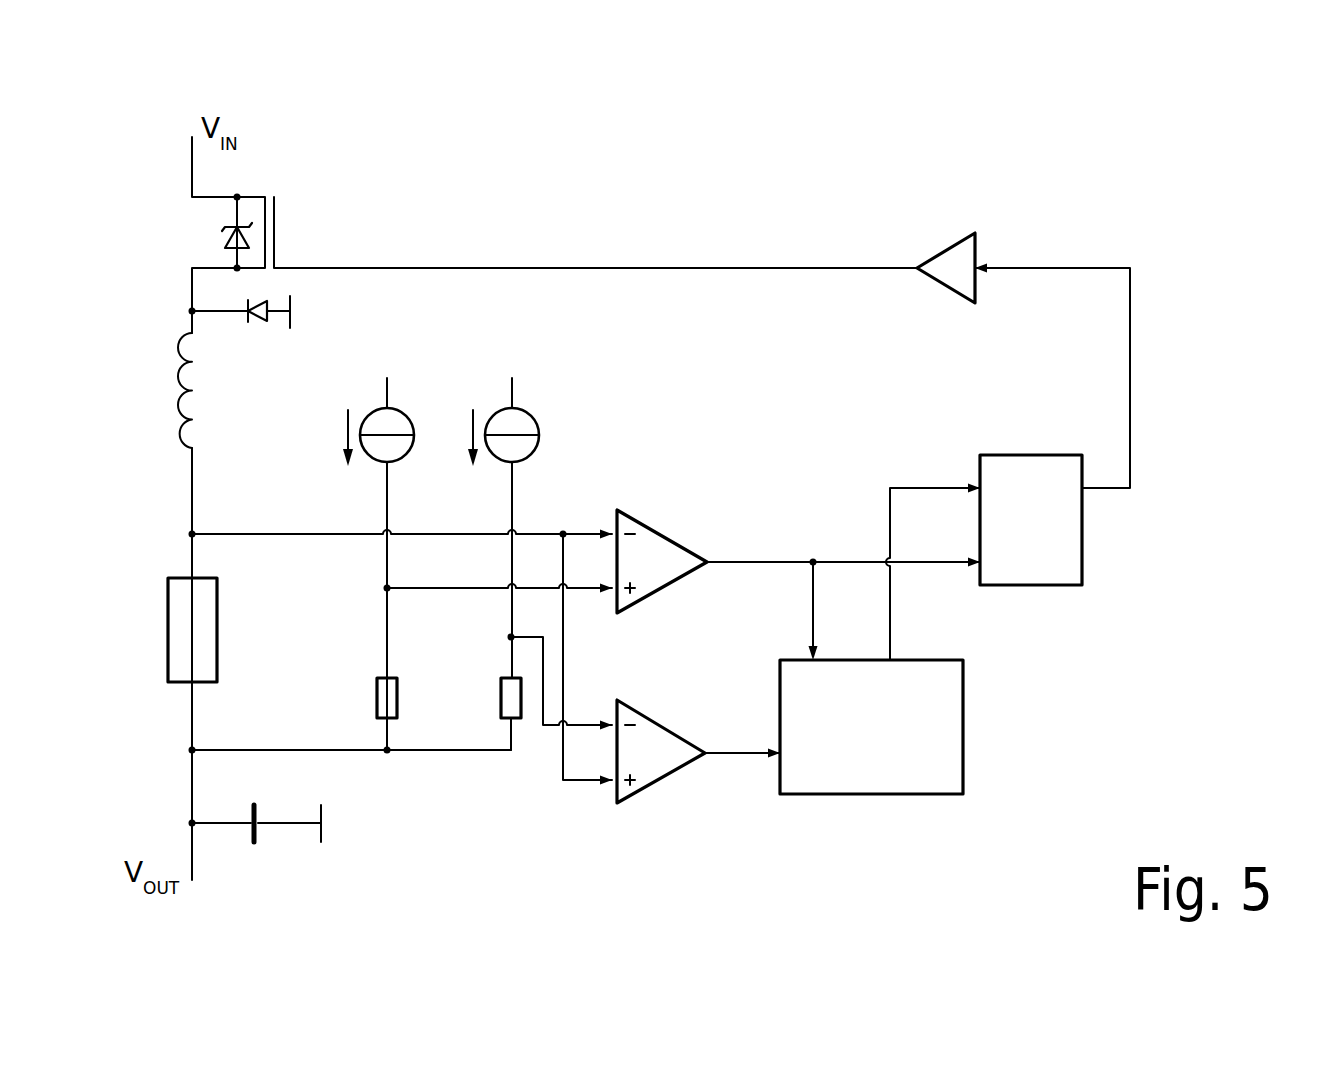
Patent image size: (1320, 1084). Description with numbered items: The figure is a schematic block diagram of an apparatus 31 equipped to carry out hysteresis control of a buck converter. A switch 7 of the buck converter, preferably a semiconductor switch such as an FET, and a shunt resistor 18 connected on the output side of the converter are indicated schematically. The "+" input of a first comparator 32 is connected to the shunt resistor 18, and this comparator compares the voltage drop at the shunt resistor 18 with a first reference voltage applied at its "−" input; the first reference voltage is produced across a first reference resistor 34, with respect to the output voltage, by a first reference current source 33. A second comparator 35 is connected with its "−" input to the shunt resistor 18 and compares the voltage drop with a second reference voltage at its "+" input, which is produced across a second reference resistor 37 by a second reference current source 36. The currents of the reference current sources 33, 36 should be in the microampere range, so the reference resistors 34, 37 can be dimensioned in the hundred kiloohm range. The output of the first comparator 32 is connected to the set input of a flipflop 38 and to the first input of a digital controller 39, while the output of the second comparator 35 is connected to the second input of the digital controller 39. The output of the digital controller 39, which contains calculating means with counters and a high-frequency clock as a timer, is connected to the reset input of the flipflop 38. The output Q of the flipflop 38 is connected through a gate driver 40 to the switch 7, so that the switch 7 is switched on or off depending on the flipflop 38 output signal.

The switch 7 is at (288, 231).
The shunt resistor 18 is at (168, 632).
The apparatus 31 is at (1072, 200).
The first comparator 32 is at (663, 533).
The first reference current source 33 is at (403, 411).
The first reference resistor 34 is at (377, 690).
The second comparator 35 is at (663, 780).
The second reference current source 36 is at (532, 411).
The second reference resistor 37 is at (499, 698).
The flipflop 38 is at (1030, 588).
The digital controller 39 is at (963, 707).
The gate driver 40 is at (943, 247).